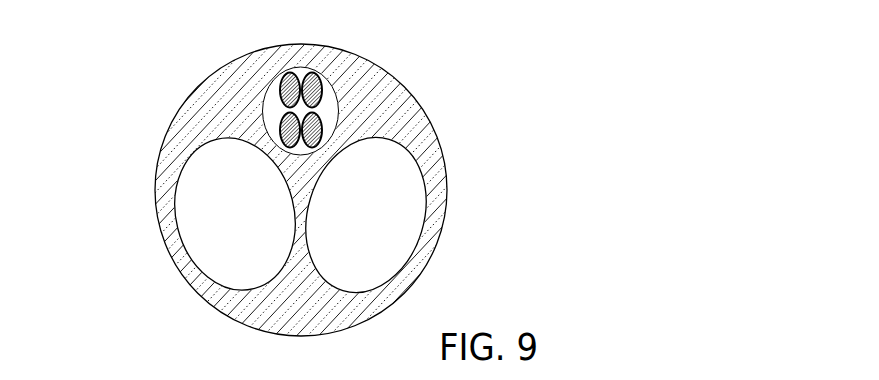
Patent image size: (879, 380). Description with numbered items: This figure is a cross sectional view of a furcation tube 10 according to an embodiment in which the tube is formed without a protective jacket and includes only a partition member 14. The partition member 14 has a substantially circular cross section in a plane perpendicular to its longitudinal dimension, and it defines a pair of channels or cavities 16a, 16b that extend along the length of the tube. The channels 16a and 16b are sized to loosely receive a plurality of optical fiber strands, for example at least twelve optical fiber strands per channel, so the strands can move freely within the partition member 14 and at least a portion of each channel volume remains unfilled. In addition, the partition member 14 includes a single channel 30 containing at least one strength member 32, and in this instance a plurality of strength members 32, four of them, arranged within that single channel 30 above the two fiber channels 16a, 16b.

The furcation tube 10 is at (146, 275).
The partition member 14 is at (400, 83).
The channel 16a is at (193, 218).
The channel 16b is at (400, 217).
The channel 30 is at (270, 102).
The strength member 32 is at (322, 88).